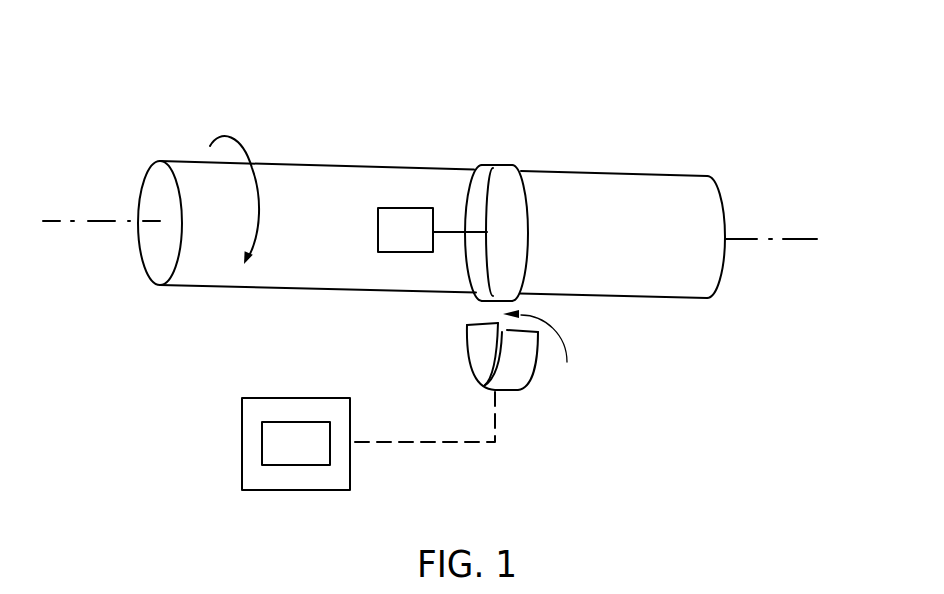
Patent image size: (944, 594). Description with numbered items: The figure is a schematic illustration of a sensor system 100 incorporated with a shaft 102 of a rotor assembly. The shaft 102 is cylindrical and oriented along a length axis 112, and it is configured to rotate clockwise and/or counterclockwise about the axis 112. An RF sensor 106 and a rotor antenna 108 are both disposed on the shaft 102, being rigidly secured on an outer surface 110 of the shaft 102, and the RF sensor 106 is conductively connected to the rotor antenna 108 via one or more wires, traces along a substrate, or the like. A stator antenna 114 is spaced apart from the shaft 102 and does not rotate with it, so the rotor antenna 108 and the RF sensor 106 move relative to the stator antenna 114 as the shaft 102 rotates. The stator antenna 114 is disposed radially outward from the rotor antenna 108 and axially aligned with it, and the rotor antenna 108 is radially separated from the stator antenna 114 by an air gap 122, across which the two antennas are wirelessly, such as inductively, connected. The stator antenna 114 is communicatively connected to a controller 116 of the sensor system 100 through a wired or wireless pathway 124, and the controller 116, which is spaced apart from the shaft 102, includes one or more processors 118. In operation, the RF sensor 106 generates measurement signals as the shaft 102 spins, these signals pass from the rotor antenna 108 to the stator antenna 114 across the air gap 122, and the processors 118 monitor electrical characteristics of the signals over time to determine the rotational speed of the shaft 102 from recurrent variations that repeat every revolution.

The sensor system 100 is at (512, 74).
The shaft 102 is at (431, 199).
The RF sensor 106 is at (403, 207).
The rotor antenna 108 is at (515, 220).
The outer surface 110 is at (339, 208).
The length axis 112 is at (95, 214).
The stator antenna 114 is at (517, 381).
The controller 116 is at (256, 444).
The processors 118 is at (296, 443).
The air gap 122 is at (545, 350).
The pathway 124 is at (430, 445).